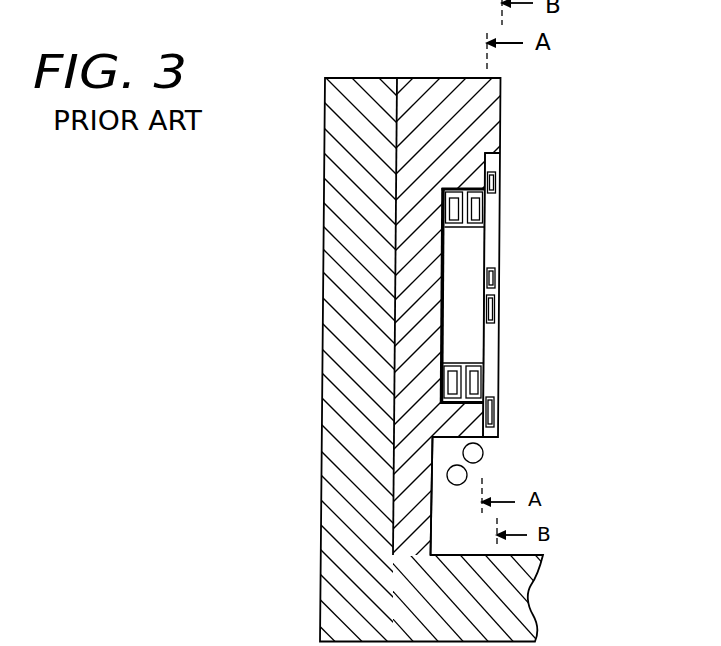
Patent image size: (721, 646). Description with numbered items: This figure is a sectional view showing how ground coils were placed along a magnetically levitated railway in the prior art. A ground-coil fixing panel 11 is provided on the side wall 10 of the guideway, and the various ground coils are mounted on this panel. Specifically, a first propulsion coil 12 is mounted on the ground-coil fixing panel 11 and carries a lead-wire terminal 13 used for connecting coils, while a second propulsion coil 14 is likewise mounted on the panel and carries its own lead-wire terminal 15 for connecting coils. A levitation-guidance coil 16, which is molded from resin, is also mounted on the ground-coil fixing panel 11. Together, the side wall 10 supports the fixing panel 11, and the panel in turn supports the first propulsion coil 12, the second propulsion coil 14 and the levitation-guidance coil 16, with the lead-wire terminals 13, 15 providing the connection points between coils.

The side wall 10 is at (337, 157).
The ground-coil fixing panel 11 is at (417, 314).
The first propulsion coil 12 is at (443, 187).
The lead-wire terminal 13 is at (450, 475).
The second propulsion coil 14 is at (469, 186).
The lead-wire terminal 15 is at (484, 453).
The levitation-guidance coil 16 is at (490, 163).